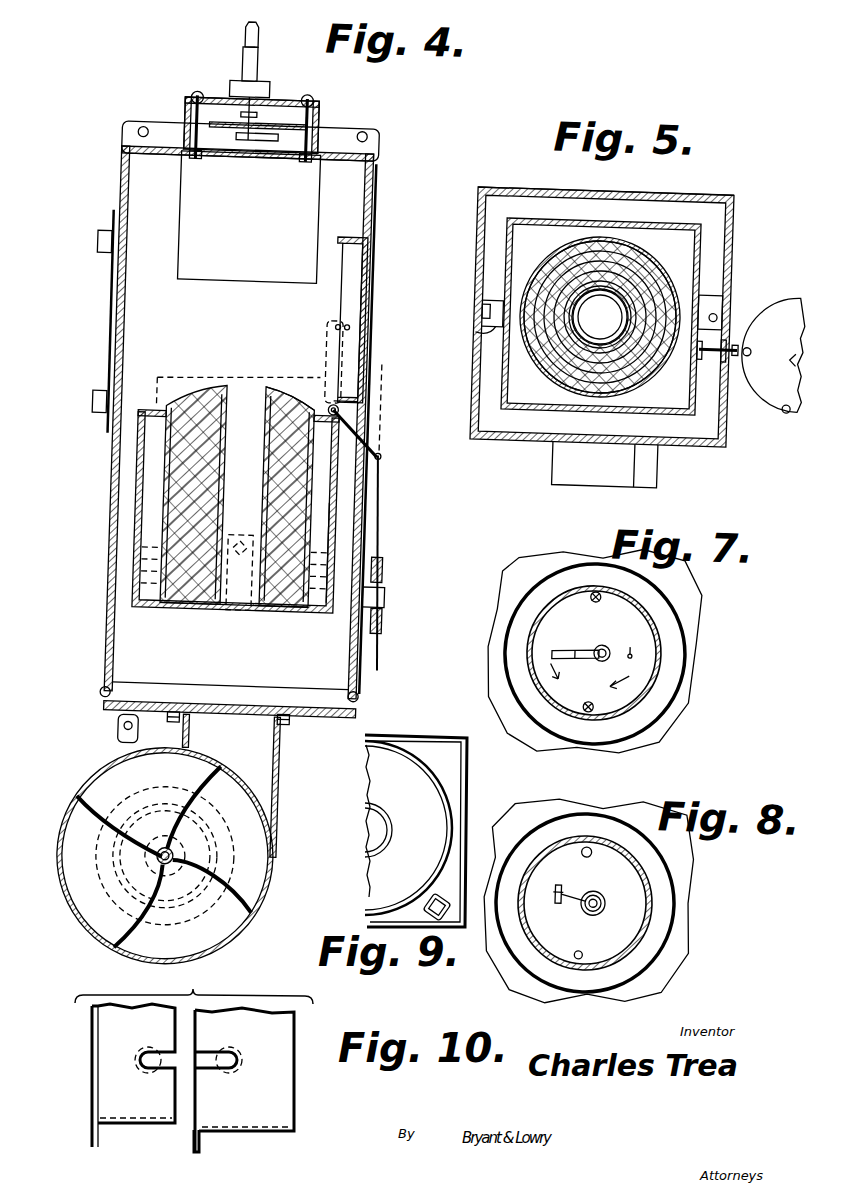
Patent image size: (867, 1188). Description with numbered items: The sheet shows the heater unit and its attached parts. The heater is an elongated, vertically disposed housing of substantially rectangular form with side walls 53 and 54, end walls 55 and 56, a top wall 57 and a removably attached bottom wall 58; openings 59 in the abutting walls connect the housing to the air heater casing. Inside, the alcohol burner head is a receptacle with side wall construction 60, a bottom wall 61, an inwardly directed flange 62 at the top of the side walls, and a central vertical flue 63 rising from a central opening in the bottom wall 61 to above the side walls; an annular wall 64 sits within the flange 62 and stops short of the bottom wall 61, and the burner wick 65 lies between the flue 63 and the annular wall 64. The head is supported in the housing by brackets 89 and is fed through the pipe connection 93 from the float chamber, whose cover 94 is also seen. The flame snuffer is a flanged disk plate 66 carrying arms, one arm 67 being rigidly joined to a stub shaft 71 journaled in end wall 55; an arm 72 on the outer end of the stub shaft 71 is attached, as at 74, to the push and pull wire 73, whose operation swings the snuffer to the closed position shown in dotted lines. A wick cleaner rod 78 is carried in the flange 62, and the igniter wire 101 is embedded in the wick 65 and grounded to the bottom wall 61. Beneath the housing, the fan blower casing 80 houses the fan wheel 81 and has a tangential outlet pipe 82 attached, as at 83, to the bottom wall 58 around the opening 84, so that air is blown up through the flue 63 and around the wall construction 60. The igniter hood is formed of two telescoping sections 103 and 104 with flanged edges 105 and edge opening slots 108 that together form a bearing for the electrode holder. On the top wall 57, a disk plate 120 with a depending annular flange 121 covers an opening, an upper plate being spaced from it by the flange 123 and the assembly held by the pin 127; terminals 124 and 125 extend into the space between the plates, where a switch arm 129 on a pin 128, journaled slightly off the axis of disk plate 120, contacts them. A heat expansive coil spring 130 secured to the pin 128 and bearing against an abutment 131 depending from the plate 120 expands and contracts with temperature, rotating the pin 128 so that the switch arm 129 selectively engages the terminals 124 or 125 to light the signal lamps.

In FIG. 4, the side wall 53 is at (113, 538).
In FIG. 5, the side wall 53 is at (523, 444).
In FIG. 4, the side wall 54 is at (371, 492).
In FIG. 5, the side wall 54 is at (523, 192).
In FIG. 5, the end wall 55 is at (478, 275).
In FIG. 5, the end wall 56 is at (738, 276).
In FIG. 4, the top wall 57 is at (333, 150).
In FIG. 7, the top wall 57 is at (527, 592).
In FIG. 8, the top wall 57 is at (678, 914).
In FIG. 4, the bottom wall 58 is at (344, 722).
In FIG. 4, the openings 59 is at (180, 234).
In FIG. 4, the side wall construction 60 is at (338, 534).
In FIG. 5, the side wall construction 60 is at (648, 222).
In FIG. 9, the side wall construction 60 is at (468, 758).
In FIG. 4, the bottom wall 61 is at (308, 612).
In FIG. 4, the inwardly directed flange 62 is at (150, 412).
In FIG. 9, the inwardly directed flange 62 is at (431, 752).
In FIG. 4, the central vertical flue 63 is at (240, 395).
In FIG. 5, the central vertical flue 63 is at (640, 366).
In FIG. 9, the central vertical flue 63 is at (385, 820).
In FIG. 4, the annular wall 64 is at (165, 483).
In FIG. 5, the annular wall 64 is at (566, 378).
In FIG. 9, the annular wall 64 is at (445, 792).
In FIG. 4, the burner wick 65 is at (290, 390).
In FIG. 4, the flanged disk plate 66 is at (352, 258).
In FIG. 4, the arm 67 is at (330, 360).
In FIG. 4, the stub shaft 71 is at (345, 402).
In FIG. 4, the arm 72 is at (350, 425).
In FIG. 4, the push and pull wire 73 is at (386, 516).
In FIG. 4, the attachment point 74 is at (384, 452).
In FIG. 9, the wick cleaner rod 78 is at (446, 896).
In FIG. 4, the fan blower casing 80 is at (84, 912).
In FIG. 5, the fan blower casing 80 is at (608, 472).
In FIG. 4, the fan wheel 81 is at (134, 957).
In FIG. 4, the tangential outlet pipe 82 is at (291, 758).
In FIG. 4, the attachment 83 is at (185, 705).
In FIG. 4, the opening 84 is at (238, 705).
In FIG. 5, the brackets 89 is at (478, 330).
In FIG. 5, the pipe connection 93 is at (716, 360).
In FIG. 5, the cover 94 is at (784, 406).
In FIG. 5, the wire 101 is at (640, 312).
In FIG. 10, the hood section 103 is at (145, 1110).
In FIG. 10, the hood section 104 is at (286, 1120).
In FIG. 10, the flanges 105 is at (91, 1146).
In FIG. 10, the edge opening slots 108 is at (216, 1050).
In FIG. 7, the disk plate 120 is at (616, 688).
In FIG. 7, the annular flange 121 is at (650, 598).
In FIG. 8, the annular flange 121 is at (660, 871).
In FIG. 7, the annular depending flange 123 is at (658, 628).
In FIG. 8, the annular depending flange 123 is at (652, 895).
In FIG. 7, the terminal 124 is at (552, 651).
In FIG. 7, the terminal 125 is at (630, 646).
In FIG. 7, the pin 127 is at (592, 592).
In FIG. 8, the pin 127 is at (586, 846).
In FIG. 7, the pin 128 is at (610, 658).
In FIG. 8, the pin 128 is at (589, 912).
In FIG. 7, the switch arm 129 is at (575, 650).
In FIG. 8, the heat expansive coil spring 130 is at (580, 896).
In FIG. 8, the abutment 131 is at (558, 886).